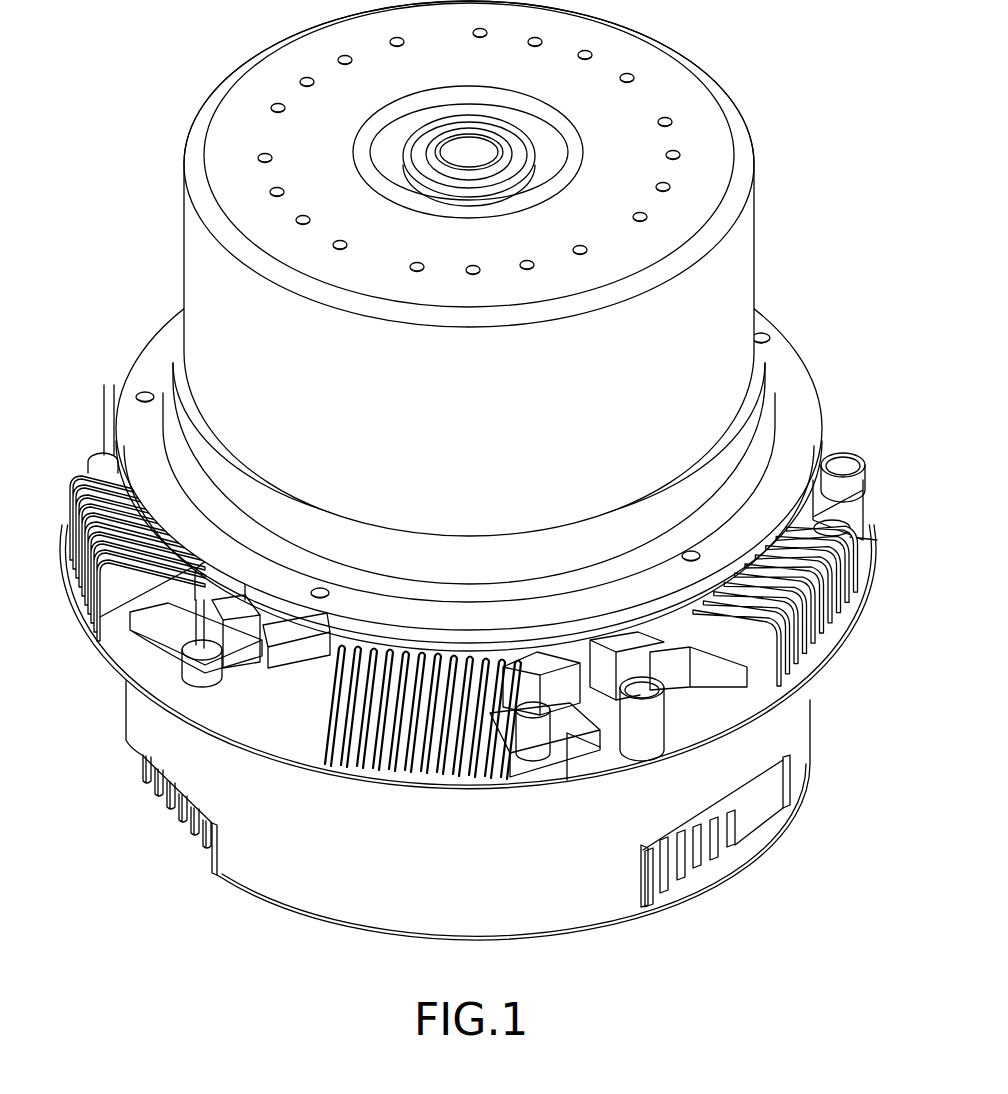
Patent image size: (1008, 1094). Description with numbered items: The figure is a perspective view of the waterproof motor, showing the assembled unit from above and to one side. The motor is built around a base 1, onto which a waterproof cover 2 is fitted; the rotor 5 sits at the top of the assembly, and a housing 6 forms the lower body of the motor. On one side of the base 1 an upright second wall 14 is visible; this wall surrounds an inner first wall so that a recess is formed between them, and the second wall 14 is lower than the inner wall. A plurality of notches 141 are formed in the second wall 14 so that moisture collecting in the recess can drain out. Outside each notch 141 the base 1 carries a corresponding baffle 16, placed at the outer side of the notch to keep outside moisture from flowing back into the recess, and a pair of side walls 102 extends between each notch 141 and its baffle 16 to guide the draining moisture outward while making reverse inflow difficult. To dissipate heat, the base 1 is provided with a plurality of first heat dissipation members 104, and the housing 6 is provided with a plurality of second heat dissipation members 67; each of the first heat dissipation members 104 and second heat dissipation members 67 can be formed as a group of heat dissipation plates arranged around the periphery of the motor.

The base 1 is at (100, 662).
The waterproof cover 2 is at (284, 657).
The rotor 5 is at (172, 232).
The housing 6 is at (794, 638).
The second wall 14 is at (577, 650).
The baffle 16 is at (235, 628).
The second heat dissipation member 67 is at (697, 847).
The side wall 102 is at (327, 636).
The first heat dissipation member 104 is at (845, 622).
The notch 141 is at (207, 568).